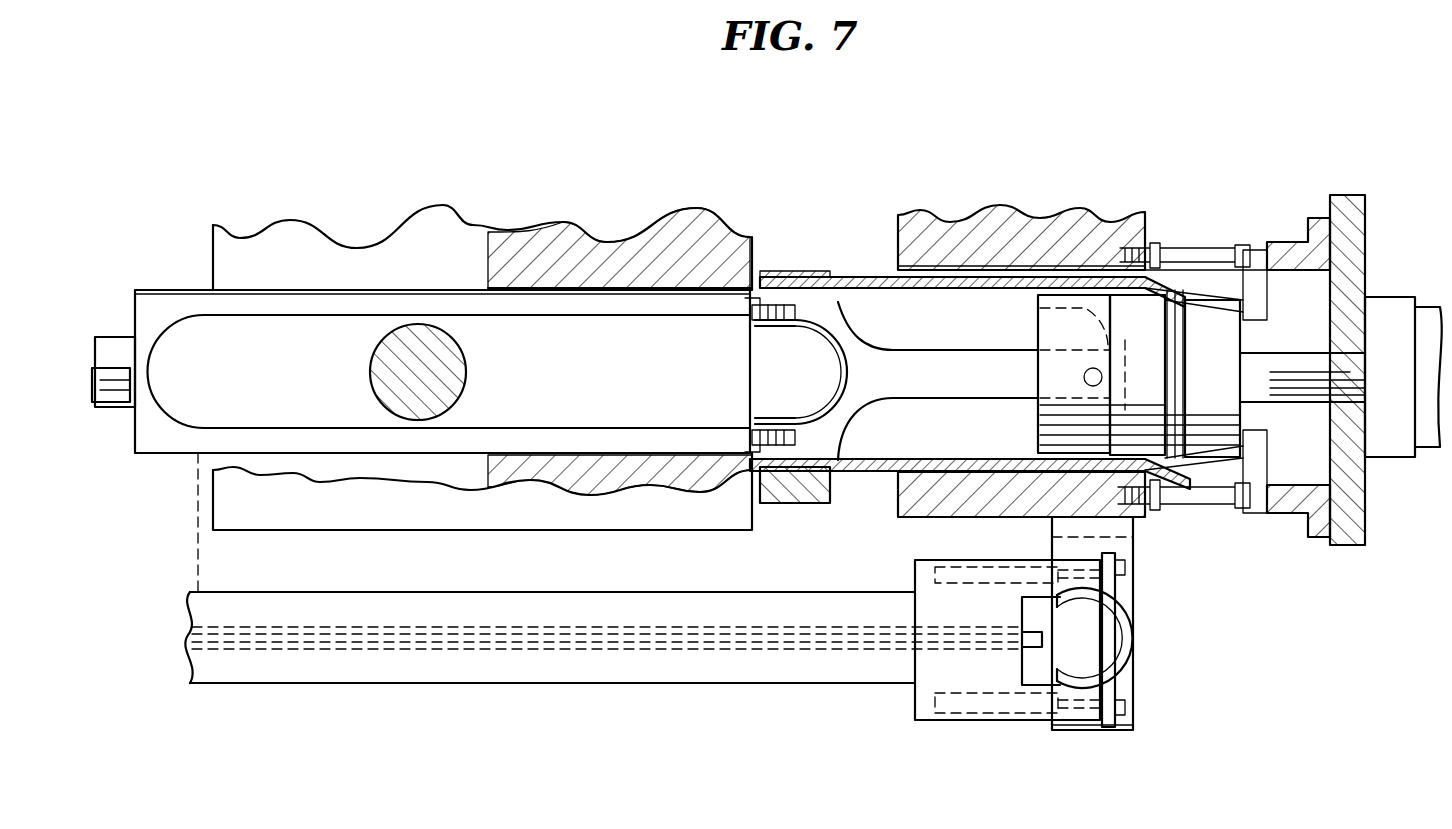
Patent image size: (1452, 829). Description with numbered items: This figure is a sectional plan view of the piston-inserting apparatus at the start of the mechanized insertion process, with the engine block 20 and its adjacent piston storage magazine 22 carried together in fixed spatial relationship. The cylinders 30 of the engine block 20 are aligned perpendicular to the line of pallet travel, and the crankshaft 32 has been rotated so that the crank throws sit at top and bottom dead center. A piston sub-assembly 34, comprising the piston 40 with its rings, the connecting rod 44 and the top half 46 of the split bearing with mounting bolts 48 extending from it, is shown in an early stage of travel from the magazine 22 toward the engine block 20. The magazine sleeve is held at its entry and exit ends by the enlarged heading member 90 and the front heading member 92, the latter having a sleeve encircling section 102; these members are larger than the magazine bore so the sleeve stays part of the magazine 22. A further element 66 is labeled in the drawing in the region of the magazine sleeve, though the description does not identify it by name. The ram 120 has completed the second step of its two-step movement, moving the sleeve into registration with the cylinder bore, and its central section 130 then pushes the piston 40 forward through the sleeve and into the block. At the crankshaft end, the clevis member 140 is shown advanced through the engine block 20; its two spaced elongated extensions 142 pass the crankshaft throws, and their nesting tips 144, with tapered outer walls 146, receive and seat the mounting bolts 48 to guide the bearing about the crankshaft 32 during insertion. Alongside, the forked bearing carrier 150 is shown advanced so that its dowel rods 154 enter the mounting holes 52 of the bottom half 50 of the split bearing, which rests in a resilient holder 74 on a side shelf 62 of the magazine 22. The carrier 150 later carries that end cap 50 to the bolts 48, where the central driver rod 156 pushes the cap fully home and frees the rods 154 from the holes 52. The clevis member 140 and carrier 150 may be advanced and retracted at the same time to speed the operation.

The engine block 20 is at (606, 240).
The piston storage magazine 22 is at (1068, 182).
The cylinders 30 is at (492, 300).
The crankshaft 32 is at (468, 372).
The piston sub-assembly 34 is at (1036, 330).
The piston 40 is at (1040, 428).
The connecting rod 44 is at (905, 384).
The top half of the split bearing 46 is at (826, 446).
The mounting bolts 48 is at (772, 322).
The bottom half of the split bearing 50 is at (1062, 662).
The mounting holes 52 is at (1115, 578).
The side shelf 62 is at (1133, 730).
The cylinder 66 is at (944, 302).
The resilient holder 74 is at (1120, 660).
The heading member 90 is at (1250, 290).
The front heading member 92 is at (812, 504).
The sleeve encircling section 102 is at (830, 276).
The ram 120 is at (1310, 330).
The central section of the ram 130 is at (1235, 425).
The clevis member 140 is at (135, 294).
The elongated extensions 142 is at (625, 318).
The nesting tips 144 is at (770, 432).
The tapered outer walls 146 is at (798, 298).
The forked bearing carrier 150 is at (690, 666).
The dowel rods 154 is at (1075, 728).
The central driver rod 156 is at (1036, 635).